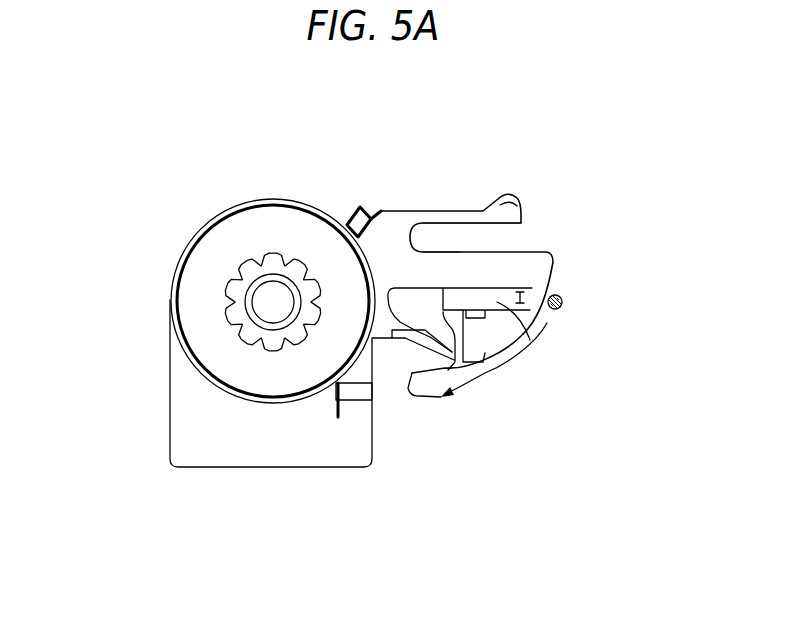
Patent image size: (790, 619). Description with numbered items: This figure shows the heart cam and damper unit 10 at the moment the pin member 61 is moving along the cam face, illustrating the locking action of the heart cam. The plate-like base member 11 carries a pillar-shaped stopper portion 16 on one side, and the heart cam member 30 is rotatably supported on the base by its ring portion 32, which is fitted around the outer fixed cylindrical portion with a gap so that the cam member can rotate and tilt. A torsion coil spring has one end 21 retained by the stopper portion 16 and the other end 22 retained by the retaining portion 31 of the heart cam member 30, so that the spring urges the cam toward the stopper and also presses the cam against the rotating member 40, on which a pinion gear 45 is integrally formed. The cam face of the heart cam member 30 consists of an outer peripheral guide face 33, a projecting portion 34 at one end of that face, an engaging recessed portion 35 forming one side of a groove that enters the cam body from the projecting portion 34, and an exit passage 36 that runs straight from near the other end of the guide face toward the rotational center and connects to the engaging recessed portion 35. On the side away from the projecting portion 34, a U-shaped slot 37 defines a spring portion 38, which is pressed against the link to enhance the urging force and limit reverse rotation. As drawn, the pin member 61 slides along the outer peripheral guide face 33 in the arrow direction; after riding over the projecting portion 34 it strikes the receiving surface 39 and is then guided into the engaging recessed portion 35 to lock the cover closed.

The heart cam and damper unit 10 is at (149, 212).
The base member 11 is at (222, 452).
The stopper portion 16 is at (358, 399).
The one end of the torsion coil spring 21 is at (336, 412).
The other end of the torsion coil spring 22 is at (381, 207).
The heart cam member 30 is at (431, 198).
The retaining portion 31 is at (352, 207).
The ring portion 32 is at (266, 199).
The outer peripheral guide face 33 is at (516, 357).
The projecting portion 34 is at (420, 396).
The engaging recessed portion 35 is at (463, 364).
The exit passage 36 is at (548, 324).
The U-shaped slot 37 is at (480, 240).
The spring portion 38 is at (512, 205).
The receiving surface 39 is at (398, 340).
The rotating member 40 is at (215, 247).
The pinion gear 45 is at (228, 305).
The pin member 61 is at (563, 302).